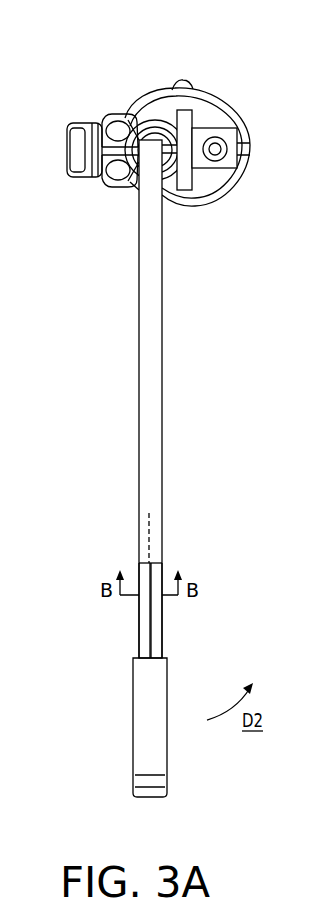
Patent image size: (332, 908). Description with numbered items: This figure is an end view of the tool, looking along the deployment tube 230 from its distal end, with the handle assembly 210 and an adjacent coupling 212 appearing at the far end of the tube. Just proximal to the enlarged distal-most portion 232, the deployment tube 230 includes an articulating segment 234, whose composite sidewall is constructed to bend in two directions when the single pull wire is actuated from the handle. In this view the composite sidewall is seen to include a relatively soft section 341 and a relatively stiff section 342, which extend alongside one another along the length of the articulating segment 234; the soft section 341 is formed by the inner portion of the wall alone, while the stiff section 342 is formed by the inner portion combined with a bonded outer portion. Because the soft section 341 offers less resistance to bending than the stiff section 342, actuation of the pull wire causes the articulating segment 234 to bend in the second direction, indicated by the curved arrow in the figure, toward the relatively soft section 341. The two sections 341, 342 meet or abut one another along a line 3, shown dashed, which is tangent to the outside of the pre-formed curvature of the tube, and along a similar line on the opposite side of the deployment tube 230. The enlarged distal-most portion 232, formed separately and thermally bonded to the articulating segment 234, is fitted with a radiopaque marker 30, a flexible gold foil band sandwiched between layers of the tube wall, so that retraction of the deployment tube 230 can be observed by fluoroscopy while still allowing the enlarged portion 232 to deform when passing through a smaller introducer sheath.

The handle assembly 210 is at (100, 67).
The end effector coupling 212 is at (78, 157).
The deployment tube 230 is at (150, 297).
The line 3 is at (150, 538).
The articulating segment 234 is at (205, 563).
The relatively stiff section 342 is at (142, 633).
The relatively soft section 341 is at (158, 645).
The enlarged distal-most portion 232 is at (152, 737).
The radiopaque marker 30 is at (135, 780).